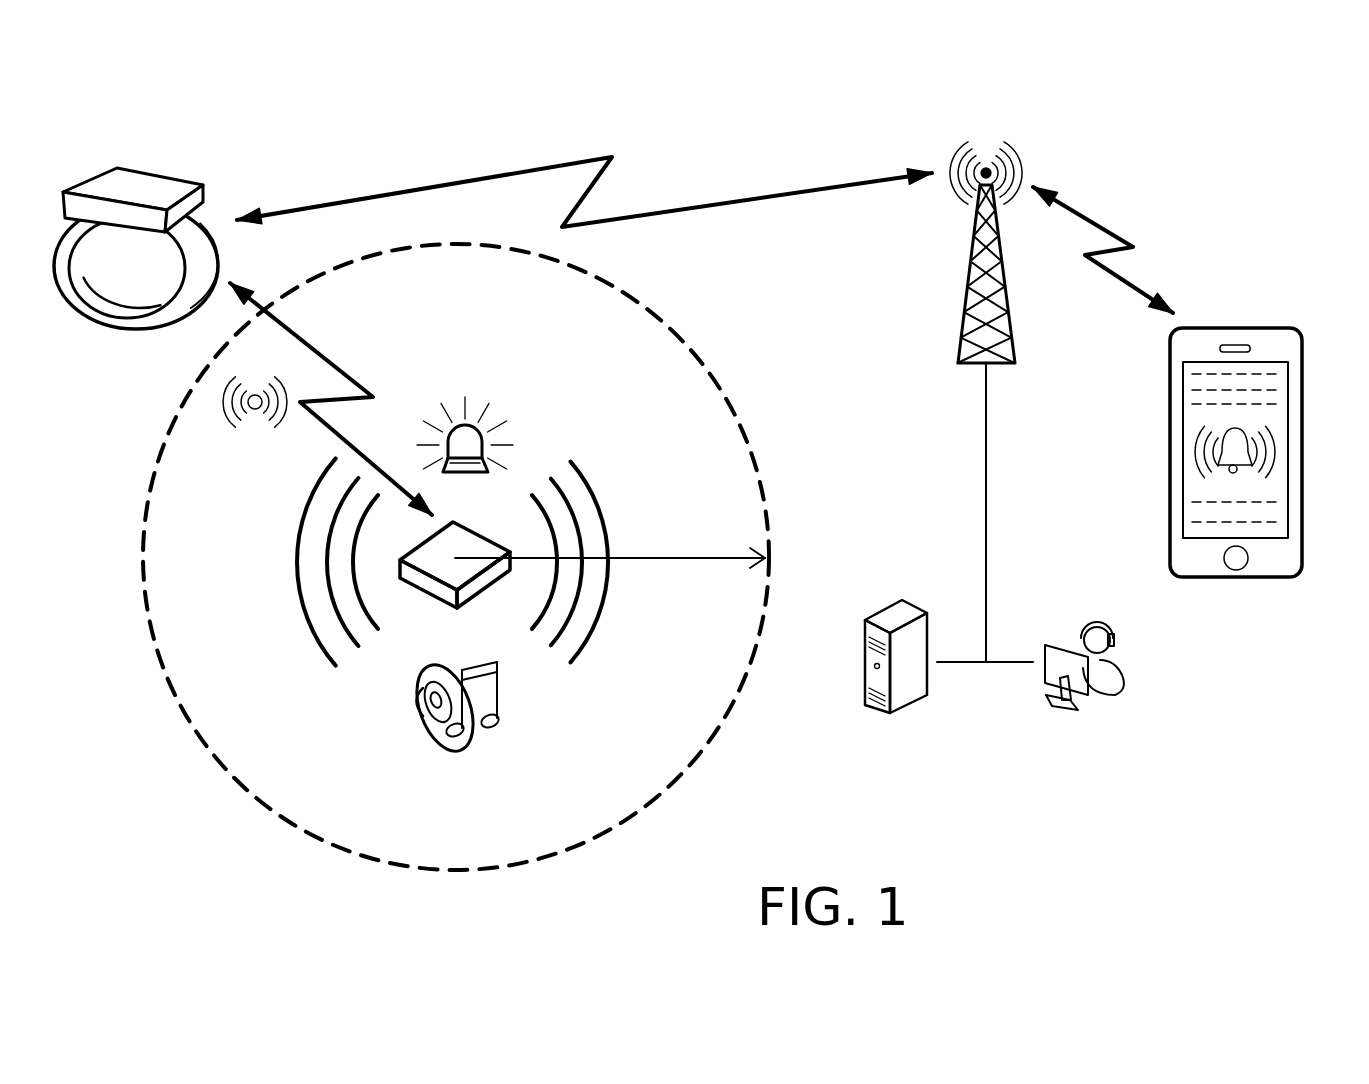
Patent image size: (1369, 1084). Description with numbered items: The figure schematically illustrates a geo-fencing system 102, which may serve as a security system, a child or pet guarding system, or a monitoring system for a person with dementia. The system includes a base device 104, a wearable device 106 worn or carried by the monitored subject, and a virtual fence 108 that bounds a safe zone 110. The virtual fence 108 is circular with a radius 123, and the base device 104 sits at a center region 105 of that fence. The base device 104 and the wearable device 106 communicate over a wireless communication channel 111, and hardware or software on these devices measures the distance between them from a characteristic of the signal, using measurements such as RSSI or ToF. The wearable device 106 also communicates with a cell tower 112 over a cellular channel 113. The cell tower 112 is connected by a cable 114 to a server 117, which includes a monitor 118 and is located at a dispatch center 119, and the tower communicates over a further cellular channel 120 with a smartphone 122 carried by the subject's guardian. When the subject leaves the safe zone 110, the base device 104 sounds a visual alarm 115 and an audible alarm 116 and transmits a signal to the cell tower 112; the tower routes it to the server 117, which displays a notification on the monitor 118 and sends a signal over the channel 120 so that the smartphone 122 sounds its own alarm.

The geo-fencing system 102 is at (1262, 139).
The base device 104 is at (433, 598).
The center region 105 is at (499, 505).
The wearable device 106 is at (142, 186).
The virtual fence 108 is at (183, 713).
The safe zone 110 is at (250, 592).
The wireless communication channel 111 is at (349, 345).
The cell tower 112 is at (970, 263).
The cellular channel 113 is at (558, 165).
The cable 114 is at (986, 458).
The visual alarm 115 is at (486, 386).
The audible alarm 116 is at (396, 727).
The server 117 is at (890, 620).
The monitor 118 is at (1065, 650).
The dispatch center 119 is at (1014, 734).
The cellular channel 120 is at (1117, 232).
The smartphone 122 is at (1235, 328).
The radius 123 is at (677, 558).